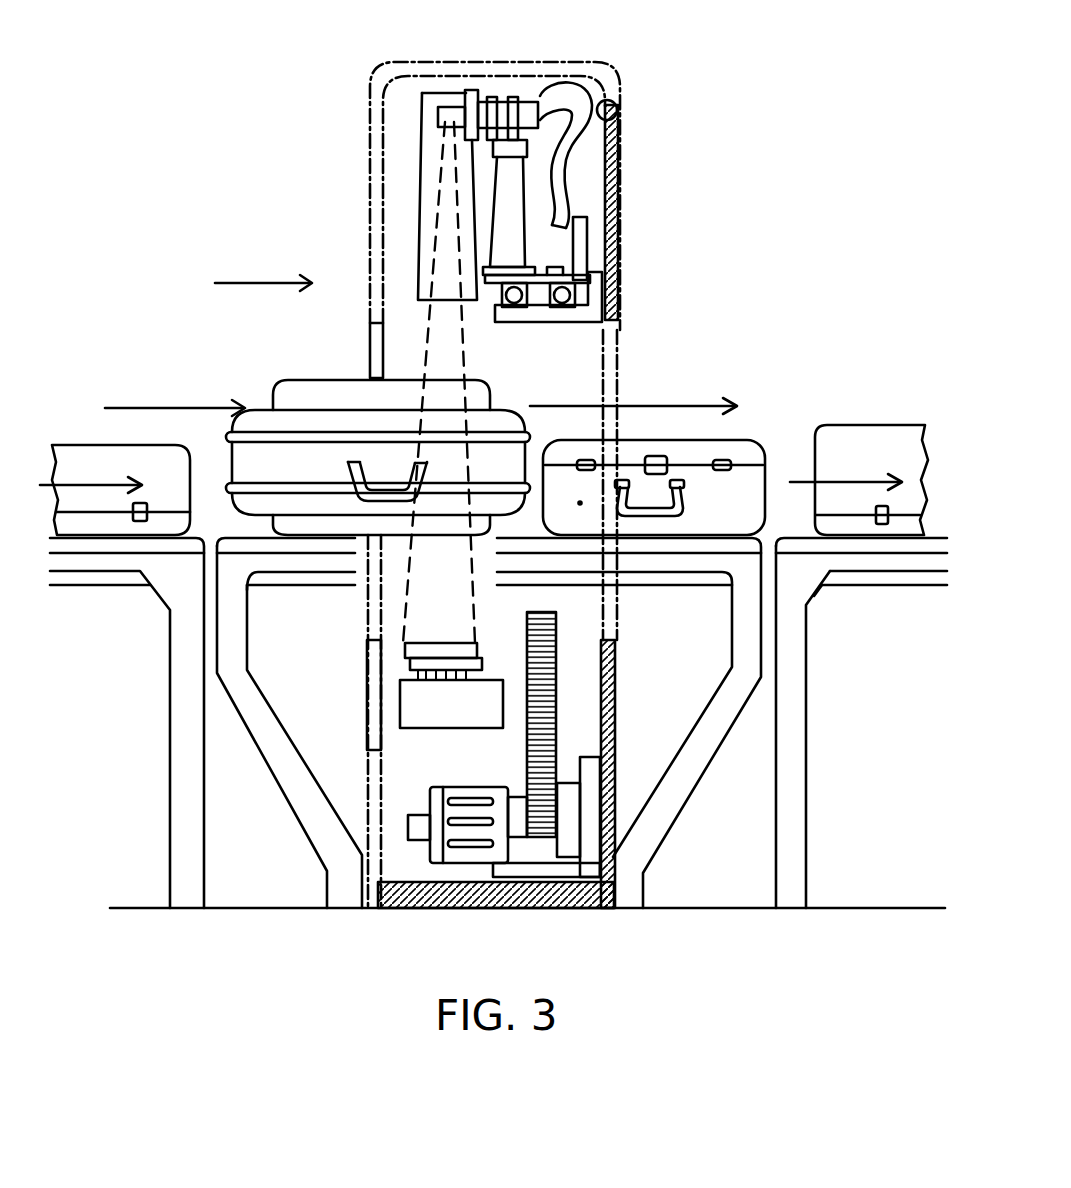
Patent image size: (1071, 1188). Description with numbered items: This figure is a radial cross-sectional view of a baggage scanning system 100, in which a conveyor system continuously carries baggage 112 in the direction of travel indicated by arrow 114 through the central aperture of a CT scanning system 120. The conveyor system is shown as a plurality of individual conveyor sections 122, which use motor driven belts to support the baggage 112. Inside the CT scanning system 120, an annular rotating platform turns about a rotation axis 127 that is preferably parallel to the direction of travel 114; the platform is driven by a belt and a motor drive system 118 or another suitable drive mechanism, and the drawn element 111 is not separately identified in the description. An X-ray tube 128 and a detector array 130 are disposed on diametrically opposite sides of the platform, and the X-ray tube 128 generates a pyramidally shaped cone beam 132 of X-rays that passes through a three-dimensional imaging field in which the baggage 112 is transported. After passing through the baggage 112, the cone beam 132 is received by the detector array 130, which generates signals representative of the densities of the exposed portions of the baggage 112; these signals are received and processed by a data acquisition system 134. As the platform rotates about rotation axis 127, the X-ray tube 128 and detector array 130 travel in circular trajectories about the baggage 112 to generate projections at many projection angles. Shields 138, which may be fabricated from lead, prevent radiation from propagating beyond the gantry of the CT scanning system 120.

The baggage scanning system 100 is at (792, 964).
The lead screw / drive rack 111 is at (557, 713).
The baggage 112 is at (329, 378).
The direction of travel 114 is at (257, 283).
The motor drive system 118 is at (497, 863).
The CT scanning system 120 is at (452, 58).
The conveyor sections 122 is at (807, 712).
The rotation axis 127 is at (166, 408).
The X-ray tube 128 is at (500, 97).
The detector array 130 is at (433, 642).
The cone beam 132 is at (471, 368).
The data acquisition system 134 is at (405, 728).
The shields 138 is at (408, 661).